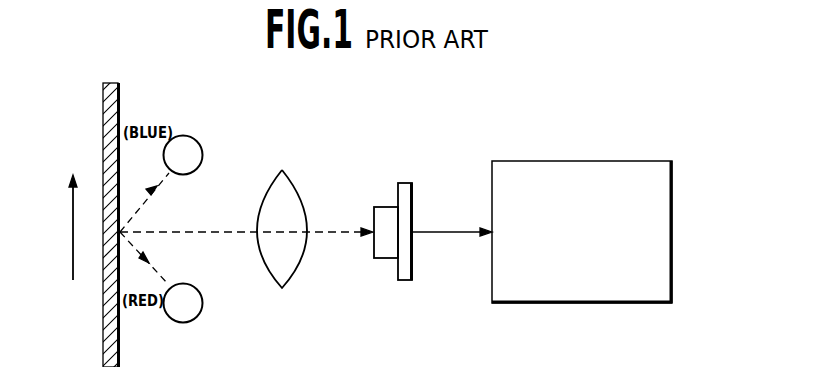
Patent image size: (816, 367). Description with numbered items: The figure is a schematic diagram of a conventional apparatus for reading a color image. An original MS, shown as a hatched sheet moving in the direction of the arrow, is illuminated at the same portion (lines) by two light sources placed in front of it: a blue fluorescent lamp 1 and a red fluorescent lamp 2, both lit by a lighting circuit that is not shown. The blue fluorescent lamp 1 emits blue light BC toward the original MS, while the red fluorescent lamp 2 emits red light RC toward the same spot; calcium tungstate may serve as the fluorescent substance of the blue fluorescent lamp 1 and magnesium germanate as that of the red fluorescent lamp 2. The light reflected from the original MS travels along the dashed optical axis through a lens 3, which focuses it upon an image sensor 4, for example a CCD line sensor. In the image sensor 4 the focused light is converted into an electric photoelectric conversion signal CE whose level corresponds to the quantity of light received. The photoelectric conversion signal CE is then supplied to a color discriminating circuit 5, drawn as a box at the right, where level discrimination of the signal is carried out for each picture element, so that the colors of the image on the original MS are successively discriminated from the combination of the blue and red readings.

The blue fluorescent lamp 1 is at (198, 142).
The red fluorescent lamp 2 is at (197, 322).
The lens 3 is at (300, 198).
The image sensor 4 is at (403, 183).
The color discriminating circuit 5 is at (637, 161).
The original MS is at (103, 93).
The blue light BC is at (144, 201).
The red light RC is at (144, 260).
The photoelectric conversion signal CE is at (452, 225).